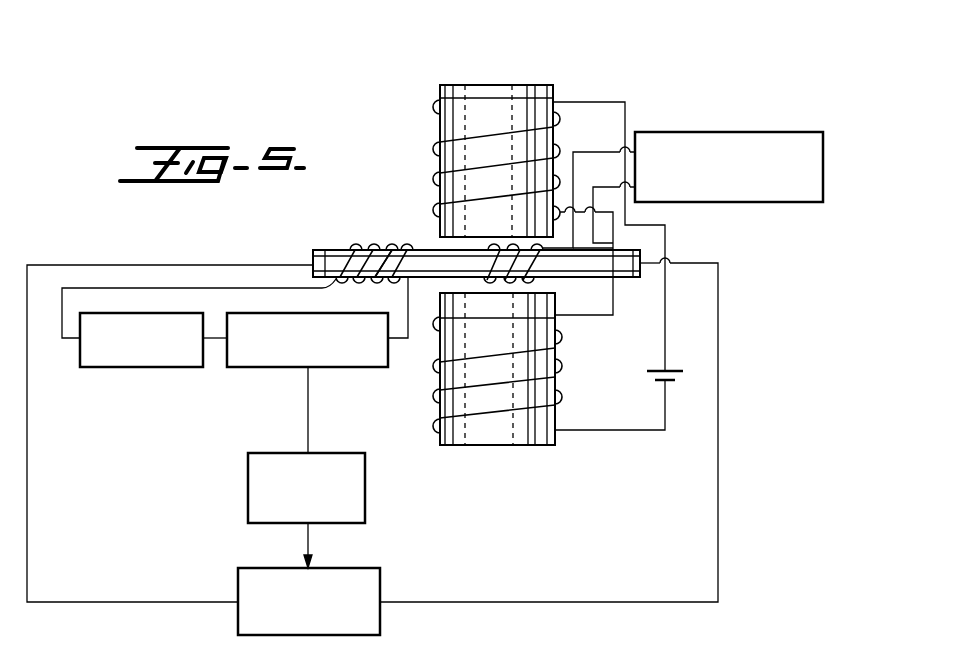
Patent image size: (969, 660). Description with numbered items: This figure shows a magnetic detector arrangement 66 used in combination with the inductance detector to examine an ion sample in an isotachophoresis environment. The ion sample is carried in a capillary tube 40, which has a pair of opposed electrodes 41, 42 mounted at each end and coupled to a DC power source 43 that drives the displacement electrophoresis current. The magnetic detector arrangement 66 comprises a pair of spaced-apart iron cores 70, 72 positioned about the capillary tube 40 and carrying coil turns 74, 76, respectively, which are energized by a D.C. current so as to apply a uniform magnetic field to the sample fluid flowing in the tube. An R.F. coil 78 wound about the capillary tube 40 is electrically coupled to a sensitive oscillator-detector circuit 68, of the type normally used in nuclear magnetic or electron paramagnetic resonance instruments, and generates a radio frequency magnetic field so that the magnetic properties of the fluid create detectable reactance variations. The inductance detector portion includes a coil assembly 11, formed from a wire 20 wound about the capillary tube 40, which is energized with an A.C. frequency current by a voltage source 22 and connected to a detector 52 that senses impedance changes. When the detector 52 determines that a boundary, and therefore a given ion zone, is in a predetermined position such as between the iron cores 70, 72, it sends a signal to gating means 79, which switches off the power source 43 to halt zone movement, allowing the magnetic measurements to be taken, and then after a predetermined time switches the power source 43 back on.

The coil assembly 11 is at (378, 241).
The single wire 20 is at (397, 340).
The voltage source 22 is at (144, 367).
The capillary tube 40 is at (432, 255).
The electrode 41 is at (326, 249).
The electrode 42 is at (648, 252).
The DC power source 43 is at (370, 568).
The detector 52 is at (291, 367).
The magnetic detector arrangement 66 is at (497, 78).
The oscillator-detector circuit 68 is at (729, 132).
The iron core 70 is at (450, 162).
The iron core 72 is at (540, 323).
The coil turns 74 is at (558, 118).
The coil turns 76 is at (562, 367).
The R.F. coil 78 is at (564, 284).
The gating means 79 is at (365, 474).